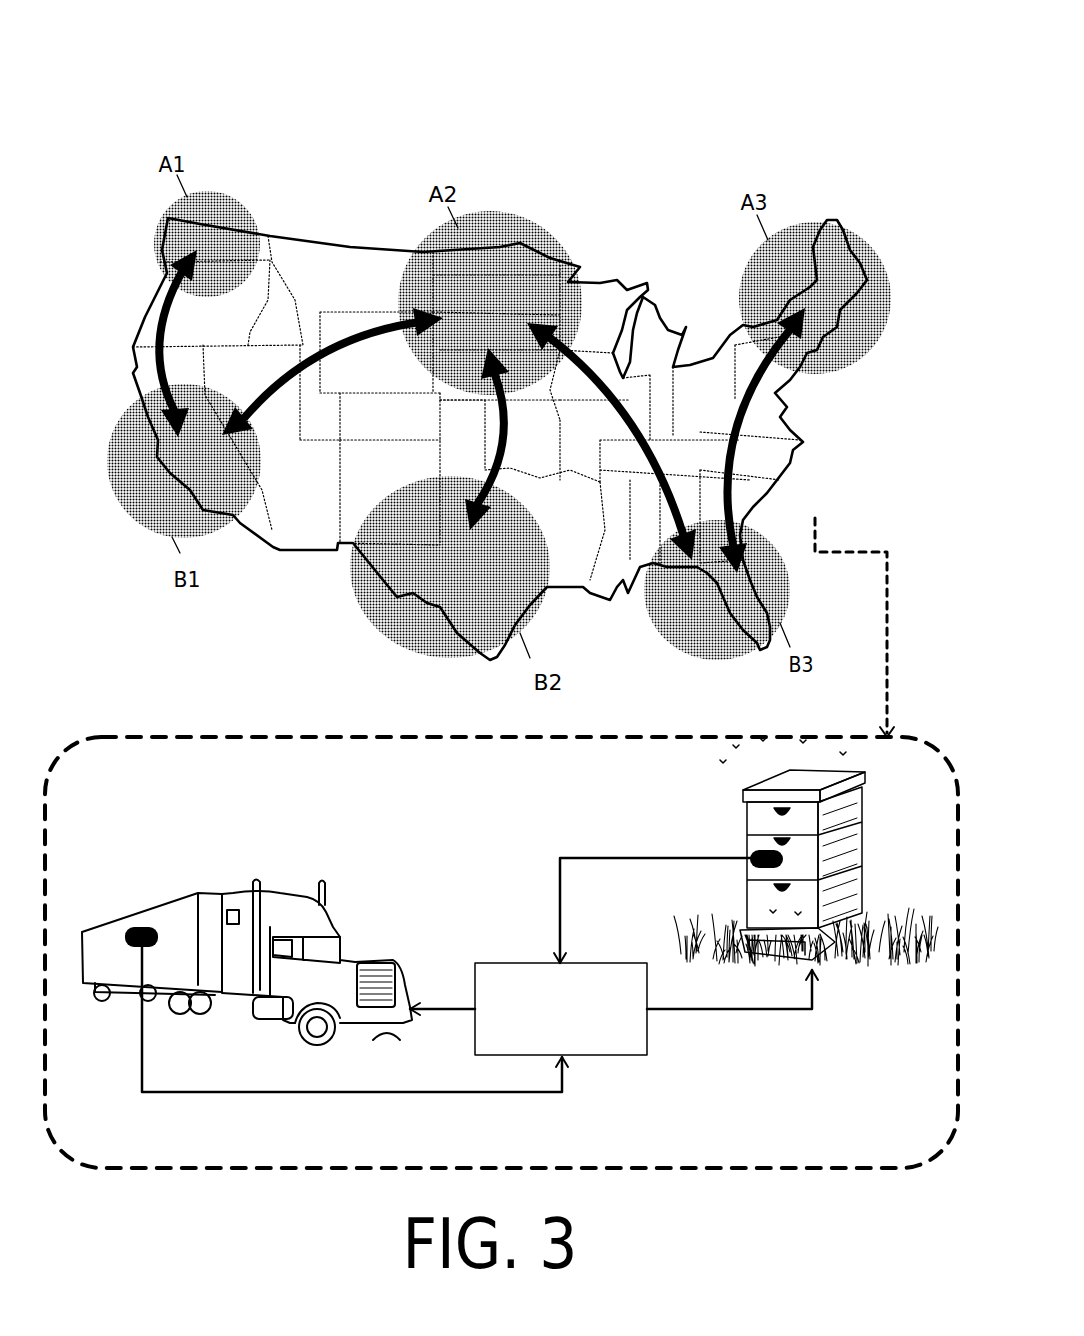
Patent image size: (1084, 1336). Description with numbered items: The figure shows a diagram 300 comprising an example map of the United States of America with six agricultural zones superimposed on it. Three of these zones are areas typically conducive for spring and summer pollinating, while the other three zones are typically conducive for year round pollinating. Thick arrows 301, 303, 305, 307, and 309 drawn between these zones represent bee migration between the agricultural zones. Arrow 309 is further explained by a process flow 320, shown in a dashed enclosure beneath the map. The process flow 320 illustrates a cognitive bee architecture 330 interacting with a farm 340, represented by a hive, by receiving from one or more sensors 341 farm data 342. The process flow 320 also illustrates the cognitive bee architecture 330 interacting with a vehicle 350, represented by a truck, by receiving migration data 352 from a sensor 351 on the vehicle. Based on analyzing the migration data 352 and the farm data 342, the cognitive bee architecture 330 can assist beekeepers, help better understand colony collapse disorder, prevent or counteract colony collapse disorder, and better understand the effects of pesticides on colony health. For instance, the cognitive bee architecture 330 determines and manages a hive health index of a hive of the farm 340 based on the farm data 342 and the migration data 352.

The diagram 300 is at (788, 100).
The arrow 301 is at (137, 378).
The arrow 303 is at (276, 388).
The arrow 305 is at (502, 457).
The arrow 307 is at (617, 418).
The arrow 309 is at (735, 457).
The process flow 320 is at (370, 812).
The cognitive bee architecture 330 is at (622, 1057).
The farm 340 is at (863, 958).
The sensors 341 is at (748, 850).
The farm data 342 is at (562, 857).
The vehicle 350 is at (326, 902).
The sensor 351 is at (142, 928).
The migration data 352 is at (317, 1093).